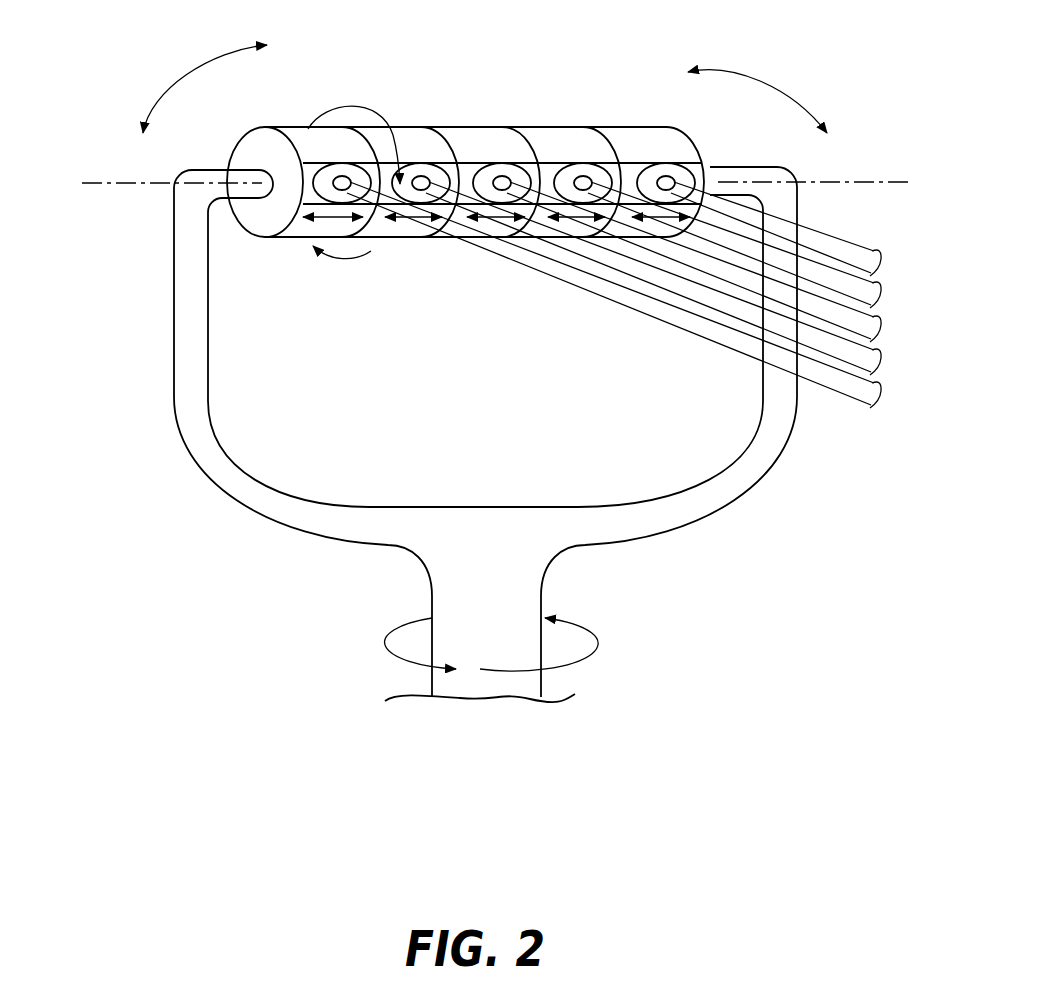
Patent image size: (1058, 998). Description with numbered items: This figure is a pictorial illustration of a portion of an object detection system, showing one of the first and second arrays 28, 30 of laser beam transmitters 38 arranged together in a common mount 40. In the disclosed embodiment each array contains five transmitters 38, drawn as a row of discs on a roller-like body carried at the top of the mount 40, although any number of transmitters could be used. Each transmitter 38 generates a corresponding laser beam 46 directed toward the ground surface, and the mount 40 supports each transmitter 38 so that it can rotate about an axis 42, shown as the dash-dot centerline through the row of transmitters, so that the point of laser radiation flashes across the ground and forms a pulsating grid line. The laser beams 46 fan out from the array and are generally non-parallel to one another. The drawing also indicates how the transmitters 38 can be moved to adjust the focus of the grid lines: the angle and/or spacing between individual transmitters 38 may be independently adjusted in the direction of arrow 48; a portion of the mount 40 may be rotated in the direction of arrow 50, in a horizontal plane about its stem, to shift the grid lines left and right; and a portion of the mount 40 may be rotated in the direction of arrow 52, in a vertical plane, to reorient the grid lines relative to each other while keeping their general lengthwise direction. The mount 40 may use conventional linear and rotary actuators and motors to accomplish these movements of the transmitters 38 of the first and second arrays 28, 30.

The first array 28 is at (792, 538).
The second array 30 is at (496, 362).
The laser beam transmitter 38 is at (342, 177).
The common mount 40 is at (731, 493).
The axis 42 is at (134, 184).
The laser beam 46 is at (837, 350).
The arrow 48 is at (502, 219).
The arrow 50 is at (568, 631).
The arrow 52 is at (780, 85).